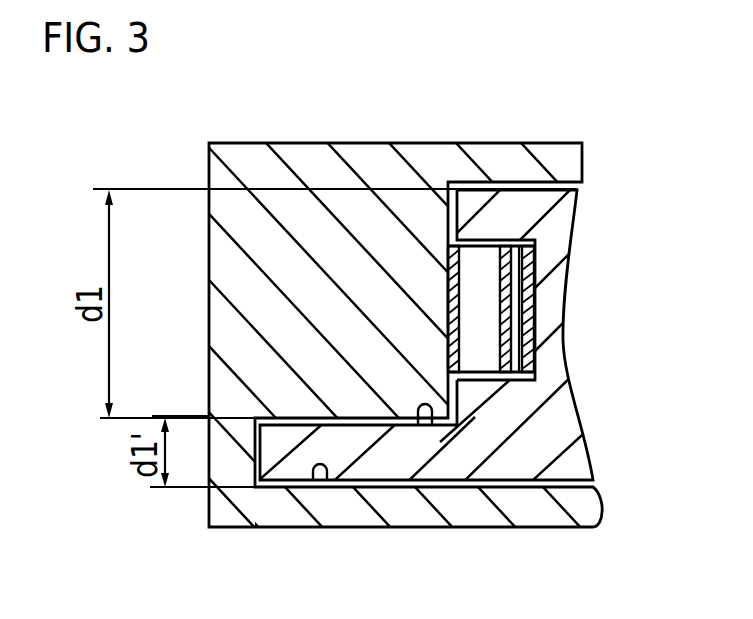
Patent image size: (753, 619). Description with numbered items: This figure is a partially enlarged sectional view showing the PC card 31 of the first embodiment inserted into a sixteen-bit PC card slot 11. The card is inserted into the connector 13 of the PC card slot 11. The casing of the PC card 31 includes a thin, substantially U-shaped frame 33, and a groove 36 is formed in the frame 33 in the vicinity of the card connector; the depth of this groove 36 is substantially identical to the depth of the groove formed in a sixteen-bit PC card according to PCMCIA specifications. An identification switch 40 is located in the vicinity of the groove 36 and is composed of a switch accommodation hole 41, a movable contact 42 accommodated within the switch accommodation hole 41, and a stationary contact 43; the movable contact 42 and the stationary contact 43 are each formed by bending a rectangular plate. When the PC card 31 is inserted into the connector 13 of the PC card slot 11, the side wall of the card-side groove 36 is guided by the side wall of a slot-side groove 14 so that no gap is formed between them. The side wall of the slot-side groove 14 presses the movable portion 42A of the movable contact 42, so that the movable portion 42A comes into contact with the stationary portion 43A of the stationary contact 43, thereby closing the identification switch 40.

The 16-bit PC card slot 11 is at (366, 125).
The connector 13 is at (244, 163).
The slot-side groove 14 is at (317, 484).
The PC card 31 is at (597, 203).
The frame 33 is at (572, 463).
The groove 36 is at (421, 425).
The identification switch 40 is at (507, 214).
The switch accommodation hole 41 is at (533, 376).
The movable contact 42 is at (478, 276).
The movable portion 42A is at (462, 257).
The stationary contact 43 is at (535, 343).
The stationary portion 43A is at (514, 302).